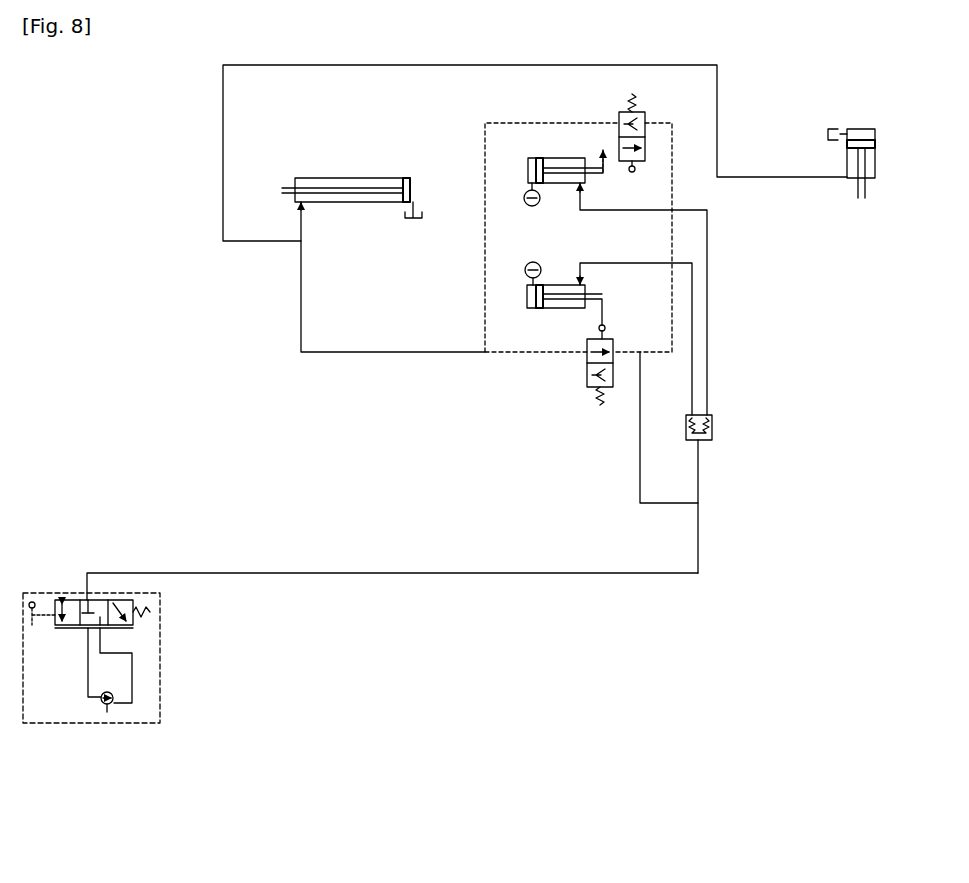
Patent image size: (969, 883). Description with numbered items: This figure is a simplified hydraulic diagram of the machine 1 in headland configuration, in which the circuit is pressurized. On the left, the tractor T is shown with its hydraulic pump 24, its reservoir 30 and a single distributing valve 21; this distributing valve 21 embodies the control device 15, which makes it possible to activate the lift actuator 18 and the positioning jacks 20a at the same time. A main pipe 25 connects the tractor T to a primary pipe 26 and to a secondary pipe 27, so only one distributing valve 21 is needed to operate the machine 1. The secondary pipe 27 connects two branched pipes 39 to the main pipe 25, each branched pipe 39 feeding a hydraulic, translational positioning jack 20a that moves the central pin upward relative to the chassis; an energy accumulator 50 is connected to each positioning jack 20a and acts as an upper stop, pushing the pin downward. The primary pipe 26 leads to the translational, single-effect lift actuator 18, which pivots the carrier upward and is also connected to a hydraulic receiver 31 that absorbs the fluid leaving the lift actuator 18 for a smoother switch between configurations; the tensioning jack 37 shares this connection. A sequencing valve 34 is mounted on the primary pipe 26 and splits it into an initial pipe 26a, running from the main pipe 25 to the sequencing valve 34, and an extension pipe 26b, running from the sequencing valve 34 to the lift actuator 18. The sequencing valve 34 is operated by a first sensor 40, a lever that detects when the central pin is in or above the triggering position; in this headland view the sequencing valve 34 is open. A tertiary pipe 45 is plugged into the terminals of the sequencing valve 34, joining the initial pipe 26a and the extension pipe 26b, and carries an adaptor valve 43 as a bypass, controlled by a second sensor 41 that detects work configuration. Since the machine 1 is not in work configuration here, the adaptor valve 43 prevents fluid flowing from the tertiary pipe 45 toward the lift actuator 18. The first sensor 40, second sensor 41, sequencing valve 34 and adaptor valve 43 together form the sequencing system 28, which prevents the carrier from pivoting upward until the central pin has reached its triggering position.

The machine 1 is at (162, 519).
The lift actuator 18 is at (350, 180).
The tertiary pipe 45 is at (485, 152).
The adaptor valve 43 is at (619, 116).
The sequencing system 28 is at (628, 116).
The second sensor 41 is at (636, 172).
The positioning jack 20a is at (552, 287).
The energy accumulator 50 is at (528, 262).
The branched pipe 39 is at (694, 300).
The first sensor 40 is at (606, 326).
The sequencing valve 34 is at (587, 359).
The secondary pipe 27 is at (702, 466).
The main pipe 25 is at (667, 576).
The primary pipe 26 is at (499, 352).
The initial pipe 26a is at (640, 447).
The extension pipe 26b is at (400, 355).
The hydraulic receiver 31 is at (837, 140).
The tensioning jack 37 is at (846, 130).
The tractor T is at (43, 591).
The distributing valve 21 is at (143, 605).
The control device 15 is at (130, 608).
The reservoir 30 is at (133, 670).
The hydraulic pump 24 is at (110, 711).